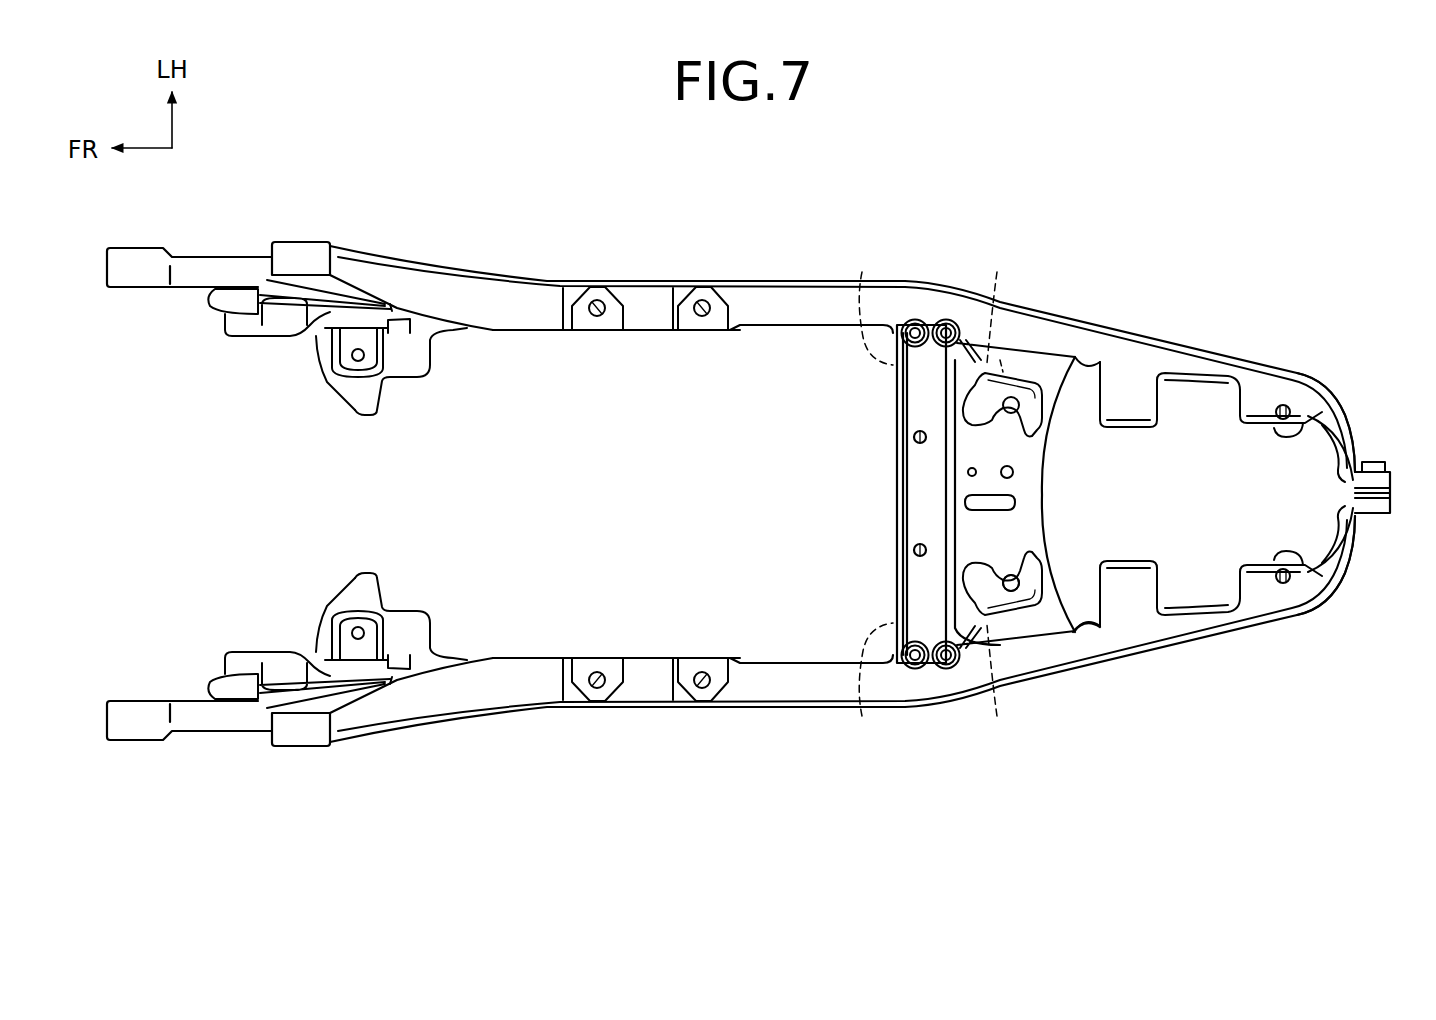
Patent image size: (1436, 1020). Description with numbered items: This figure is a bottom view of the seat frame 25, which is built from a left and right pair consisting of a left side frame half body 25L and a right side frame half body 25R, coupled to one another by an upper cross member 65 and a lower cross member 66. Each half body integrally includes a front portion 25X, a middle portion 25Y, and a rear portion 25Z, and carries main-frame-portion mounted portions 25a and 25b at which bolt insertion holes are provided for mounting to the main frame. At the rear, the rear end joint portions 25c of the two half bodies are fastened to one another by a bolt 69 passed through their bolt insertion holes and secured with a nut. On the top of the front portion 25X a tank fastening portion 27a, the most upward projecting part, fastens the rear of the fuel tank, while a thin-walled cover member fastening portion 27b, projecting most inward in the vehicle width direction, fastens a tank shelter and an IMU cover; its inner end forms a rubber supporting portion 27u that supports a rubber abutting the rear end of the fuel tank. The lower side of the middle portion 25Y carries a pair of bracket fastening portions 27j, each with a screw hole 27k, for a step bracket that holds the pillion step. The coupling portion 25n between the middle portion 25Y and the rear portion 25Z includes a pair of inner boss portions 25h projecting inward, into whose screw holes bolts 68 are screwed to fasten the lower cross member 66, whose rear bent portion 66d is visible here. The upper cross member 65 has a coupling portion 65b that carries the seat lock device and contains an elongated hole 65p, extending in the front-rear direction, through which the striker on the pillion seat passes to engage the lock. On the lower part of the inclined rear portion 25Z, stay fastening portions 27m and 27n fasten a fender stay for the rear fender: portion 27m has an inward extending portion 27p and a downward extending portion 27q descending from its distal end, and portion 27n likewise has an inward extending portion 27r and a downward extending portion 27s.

The seat frame 25 is at (396, 146).
The main-frame-portion mounted portion 25a is at (135, 262).
The left side frame half body 25L is at (228, 244).
The right side frame half body 25R is at (228, 740).
The main-frame-portion mounted portion 25b is at (300, 240).
The front portion 25X is at (395, 249).
The middle portion 25Y is at (648, 282).
The rear portion 25Z is at (1196, 358).
The rear end joint portion 25c is at (1392, 486).
The inner boss portion 25h is at (912, 322).
The coupling portion 25n is at (943, 308).
The tank fastening portion 27a is at (228, 336).
The cover member fastening portion 27b is at (340, 414).
The rubber supporting portion 27u is at (318, 370).
The bracket fastening portion 27j is at (571, 299).
The screw hole 27k is at (600, 300).
The stay fastening portion 27m is at (1150, 348).
The stay fastening portion 27n is at (1264, 400).
The inward extending portion 27p is at (1135, 362).
The downward extending portion 27q is at (1256, 390).
The inward extending portion 27r is at (1296, 396).
The downward extending portion 27s is at (1298, 424).
The upper cross member 65 is at (1054, 451).
The coupling portion 65b is at (1003, 358).
The elongated hole 65p is at (975, 446).
The lower cross member 66 is at (893, 542).
The rear bent portion 66d is at (992, 604).
The bolt 68 is at (912, 318).
The bolt 69 is at (1372, 460).